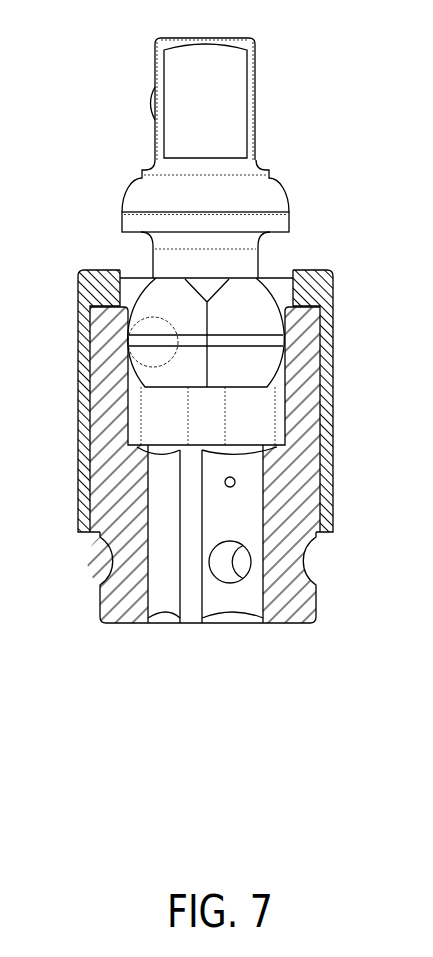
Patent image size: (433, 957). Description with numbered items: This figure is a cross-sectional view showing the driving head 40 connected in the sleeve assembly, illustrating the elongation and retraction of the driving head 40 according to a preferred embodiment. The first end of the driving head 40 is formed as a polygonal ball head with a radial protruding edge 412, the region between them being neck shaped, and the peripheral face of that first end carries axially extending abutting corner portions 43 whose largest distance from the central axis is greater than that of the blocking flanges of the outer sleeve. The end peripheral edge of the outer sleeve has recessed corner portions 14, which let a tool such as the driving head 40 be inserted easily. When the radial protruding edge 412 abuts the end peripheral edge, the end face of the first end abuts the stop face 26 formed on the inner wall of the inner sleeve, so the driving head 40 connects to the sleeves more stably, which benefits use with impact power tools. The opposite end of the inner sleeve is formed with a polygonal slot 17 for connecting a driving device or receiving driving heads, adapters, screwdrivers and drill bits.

The driving head 40 is at (122, 176).
The radial protruding edge 412 is at (122, 217).
The corner portions 14 is at (285, 268).
The abutting corner portions 43 is at (290, 300).
The polygonal slot 17 is at (147, 545).
The stop face 26 is at (277, 450).